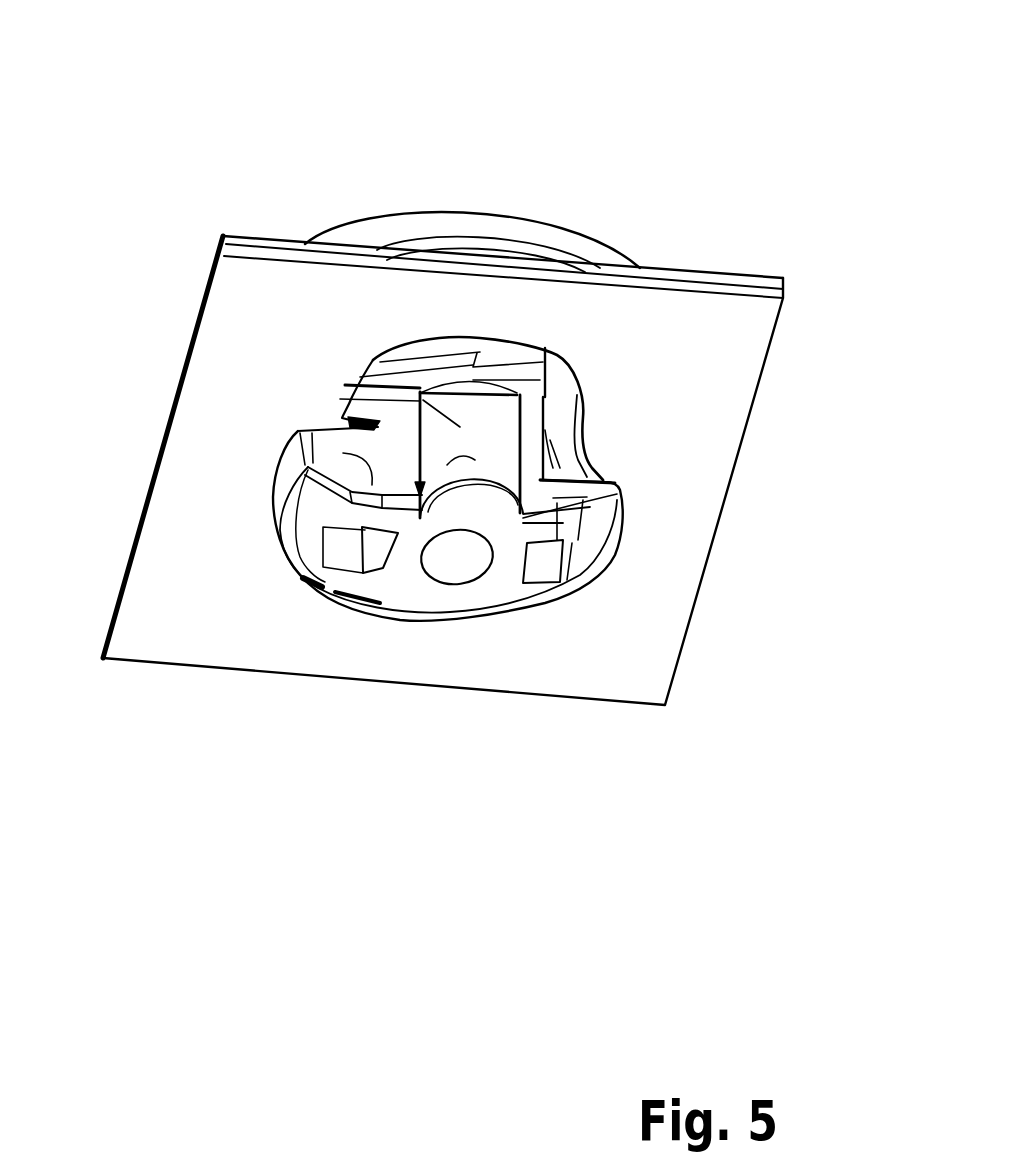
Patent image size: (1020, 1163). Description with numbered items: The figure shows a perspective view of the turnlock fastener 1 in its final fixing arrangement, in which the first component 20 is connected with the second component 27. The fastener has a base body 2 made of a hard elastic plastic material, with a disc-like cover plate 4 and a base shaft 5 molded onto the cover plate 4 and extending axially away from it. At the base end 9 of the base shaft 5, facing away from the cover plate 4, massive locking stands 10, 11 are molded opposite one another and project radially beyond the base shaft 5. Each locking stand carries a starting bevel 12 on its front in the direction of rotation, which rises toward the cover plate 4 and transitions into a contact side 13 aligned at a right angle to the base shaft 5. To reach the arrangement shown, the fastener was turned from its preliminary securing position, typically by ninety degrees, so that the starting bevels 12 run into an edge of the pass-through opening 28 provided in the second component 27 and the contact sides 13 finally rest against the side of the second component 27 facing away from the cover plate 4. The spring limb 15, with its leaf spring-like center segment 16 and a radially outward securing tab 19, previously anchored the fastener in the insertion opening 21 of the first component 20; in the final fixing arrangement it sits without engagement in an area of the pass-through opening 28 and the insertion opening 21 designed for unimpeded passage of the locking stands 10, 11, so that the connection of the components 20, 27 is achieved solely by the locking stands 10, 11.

The turnlock fastener 1 is at (471, 188).
The base body 2 is at (257, 559).
The cover plate 4 is at (553, 232).
The base shaft 5 is at (450, 555).
The base end 9 is at (435, 598).
The locking stand 10 is at (623, 500).
The locking stand 11 is at (355, 497).
The starting bevel 12 is at (590, 478).
The contact side 13 is at (313, 422).
The spring limb 15 is at (345, 388).
The center segment 16 is at (456, 458).
The securing tab 19 is at (505, 347).
The first component 20 is at (711, 274).
The insertion opening 21 is at (440, 352).
The second component 27 is at (684, 354).
The pass-through opening 28 is at (406, 371).